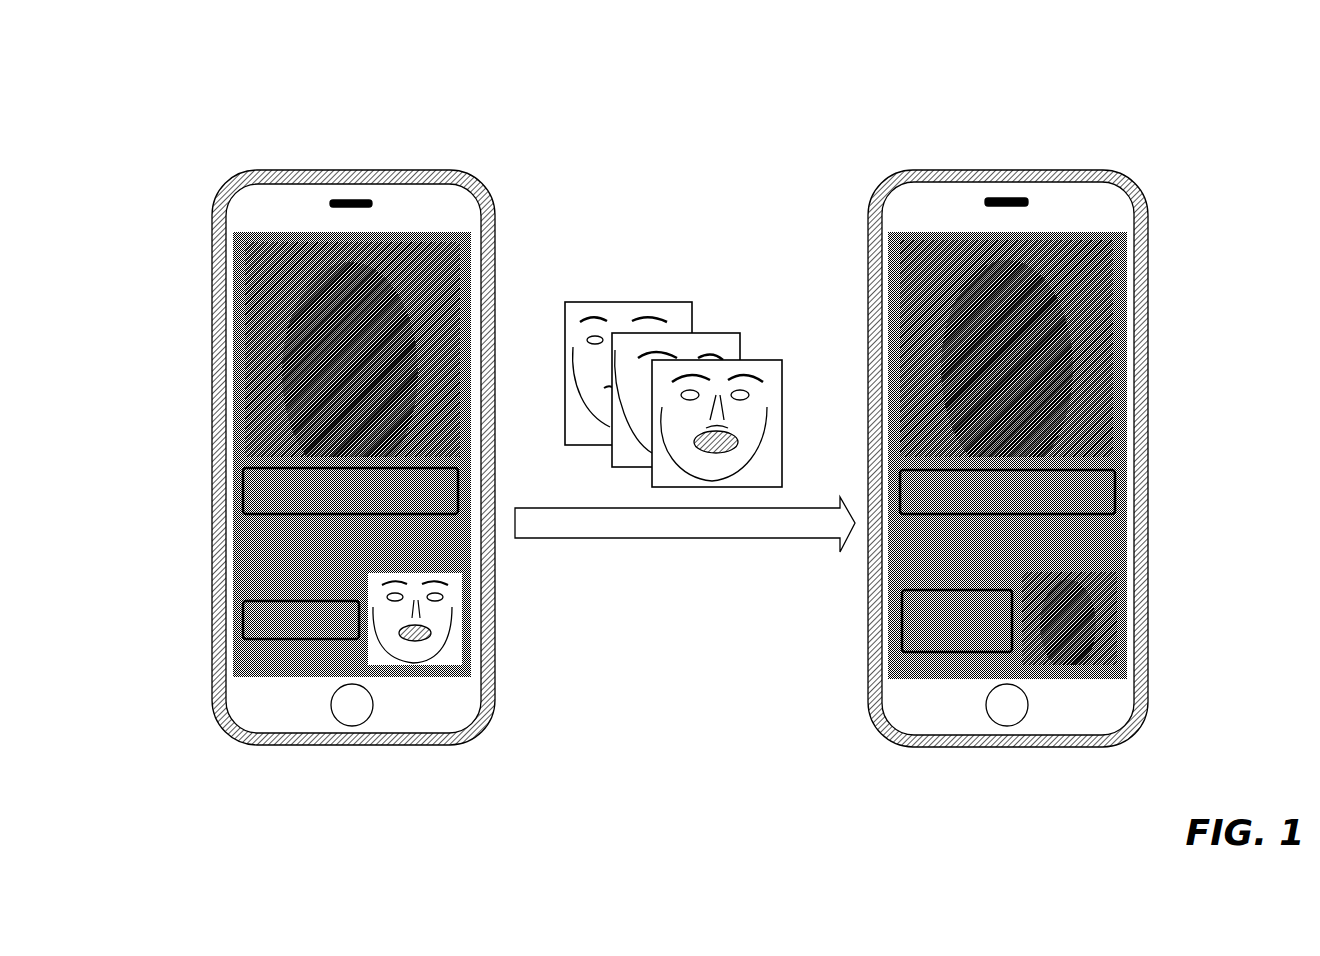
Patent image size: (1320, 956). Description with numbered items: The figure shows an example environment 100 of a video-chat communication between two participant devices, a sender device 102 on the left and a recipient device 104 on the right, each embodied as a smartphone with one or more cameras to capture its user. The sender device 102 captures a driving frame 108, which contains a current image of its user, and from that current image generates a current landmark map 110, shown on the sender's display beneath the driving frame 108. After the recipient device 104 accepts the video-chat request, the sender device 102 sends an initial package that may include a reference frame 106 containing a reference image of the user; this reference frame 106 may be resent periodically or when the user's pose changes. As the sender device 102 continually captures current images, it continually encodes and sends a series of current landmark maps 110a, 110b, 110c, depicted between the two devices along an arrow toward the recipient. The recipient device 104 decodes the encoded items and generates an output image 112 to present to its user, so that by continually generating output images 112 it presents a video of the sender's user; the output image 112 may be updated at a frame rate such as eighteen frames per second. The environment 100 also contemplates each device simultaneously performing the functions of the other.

The environment 100 is at (1152, 46).
The sender device 102 is at (302, 441).
The recipient device 104 is at (1068, 450).
The reference frame 106 is at (1113, 578).
The driving frame 108 is at (277, 242).
The current landmark map 110 is at (367, 578).
The current landmark map 110a is at (618, 301).
The current landmark map 110b is at (715, 332).
The current landmark map 110c is at (752, 360).
The output image 112 is at (1112, 297).